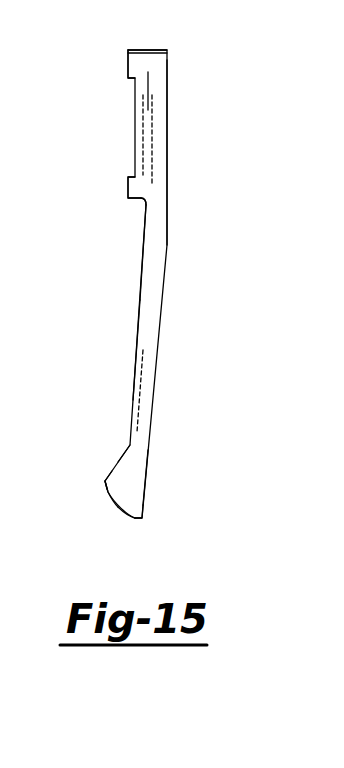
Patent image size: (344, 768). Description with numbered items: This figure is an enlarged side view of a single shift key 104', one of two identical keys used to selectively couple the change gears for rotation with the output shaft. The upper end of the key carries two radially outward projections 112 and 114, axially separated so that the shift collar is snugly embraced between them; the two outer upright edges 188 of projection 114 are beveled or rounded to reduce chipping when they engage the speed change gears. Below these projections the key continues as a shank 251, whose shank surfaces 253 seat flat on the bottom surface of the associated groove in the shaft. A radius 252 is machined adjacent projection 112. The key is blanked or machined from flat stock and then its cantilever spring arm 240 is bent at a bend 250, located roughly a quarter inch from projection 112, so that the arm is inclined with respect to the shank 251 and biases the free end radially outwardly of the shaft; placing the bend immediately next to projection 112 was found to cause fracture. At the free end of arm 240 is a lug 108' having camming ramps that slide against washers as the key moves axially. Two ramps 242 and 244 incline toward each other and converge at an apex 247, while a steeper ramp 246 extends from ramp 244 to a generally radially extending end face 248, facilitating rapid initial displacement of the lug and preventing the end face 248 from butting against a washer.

The shift key 104' is at (99, 284).
The lug 108' is at (174, 477).
The projection 112 is at (128, 187).
The projection 114 is at (128, 70).
The outer upright edge 188 is at (145, 50).
The cantilever spring arm 240 is at (135, 389).
The ramp 242 is at (118, 460).
The ramp 244 is at (108, 496).
The ramp 246 is at (123, 513).
The apex 247 is at (103, 482).
The end face 248 is at (137, 520).
The bend 250 is at (145, 250).
The shank 251 is at (158, 104).
The radius 252 is at (140, 204).
The shank surface 253 is at (168, 157).